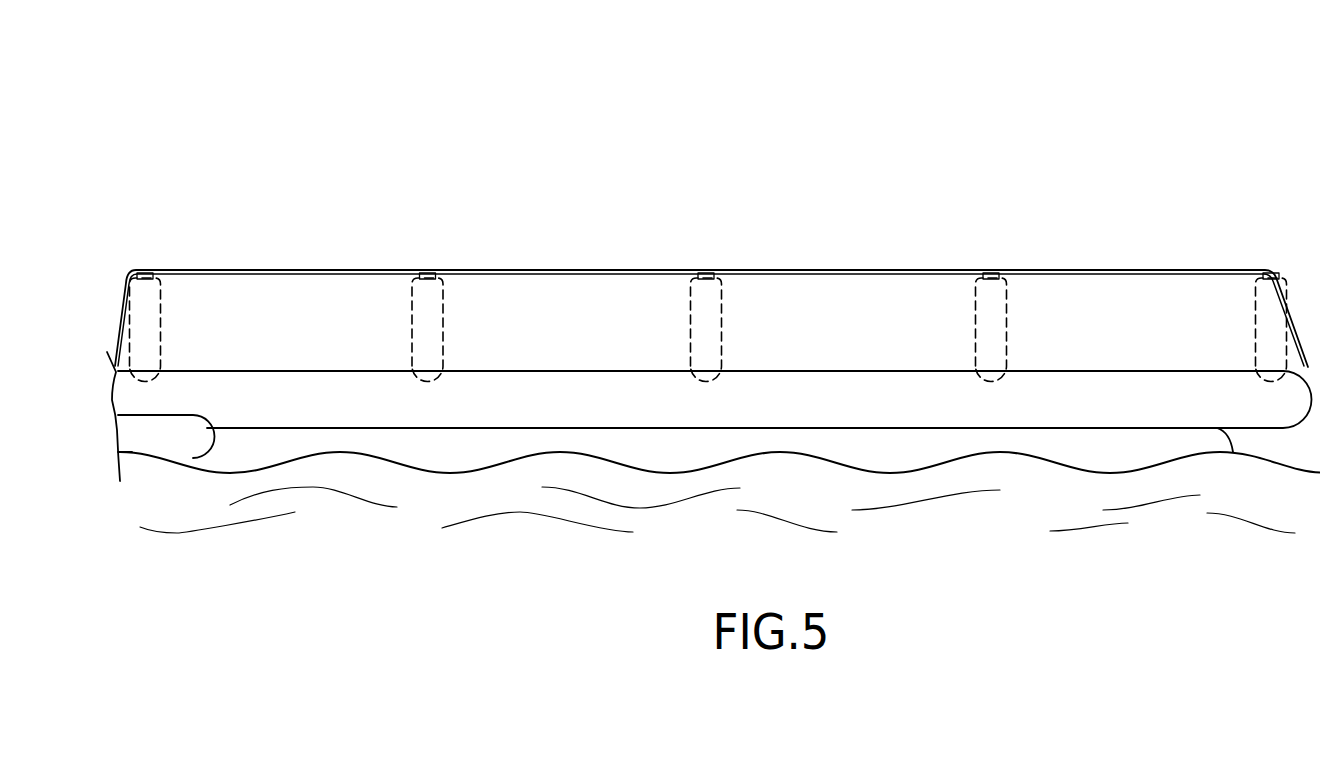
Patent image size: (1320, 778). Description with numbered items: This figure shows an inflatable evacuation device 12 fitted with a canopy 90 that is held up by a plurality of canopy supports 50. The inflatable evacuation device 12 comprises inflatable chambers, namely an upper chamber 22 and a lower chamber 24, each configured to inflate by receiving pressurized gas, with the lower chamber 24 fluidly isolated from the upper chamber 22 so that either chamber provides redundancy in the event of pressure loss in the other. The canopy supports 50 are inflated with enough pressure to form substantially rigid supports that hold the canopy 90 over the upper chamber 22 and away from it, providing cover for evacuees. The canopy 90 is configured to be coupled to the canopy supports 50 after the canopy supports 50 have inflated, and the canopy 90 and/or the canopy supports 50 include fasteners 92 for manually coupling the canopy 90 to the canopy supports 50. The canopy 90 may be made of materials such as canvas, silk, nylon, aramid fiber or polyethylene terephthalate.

The inflatable evacuation device 12 is at (948, 133).
The upper chamber 22 is at (1164, 396).
The lower chamber 24 is at (1080, 455).
The canopy support 50 is at (710, 331).
The canopy 90 is at (327, 271).
The fastener 92 is at (139, 272).